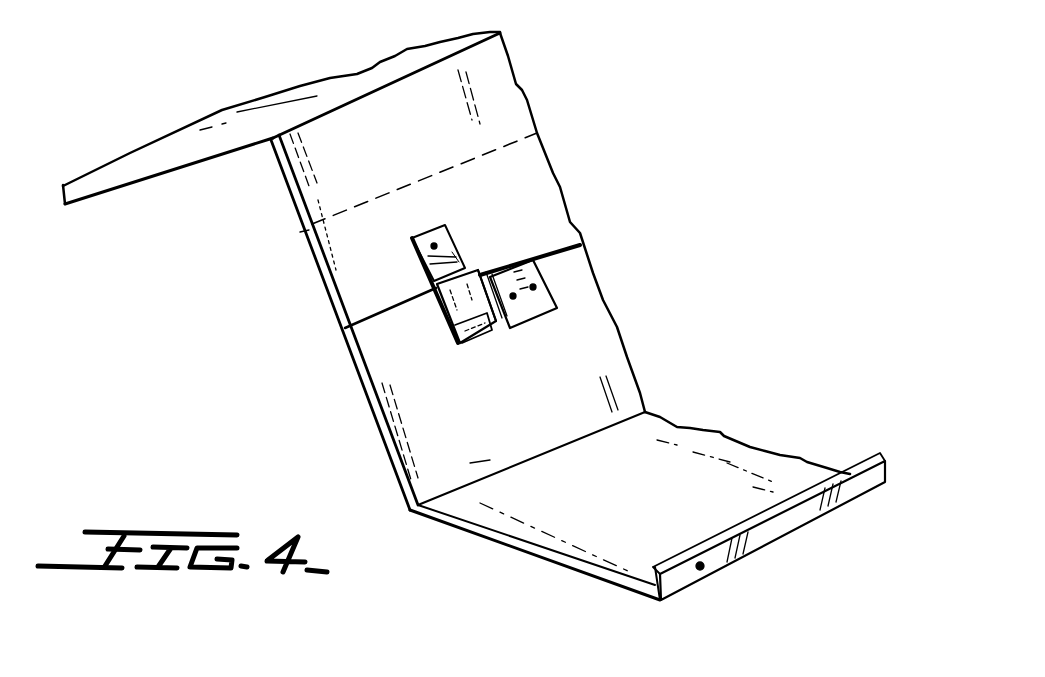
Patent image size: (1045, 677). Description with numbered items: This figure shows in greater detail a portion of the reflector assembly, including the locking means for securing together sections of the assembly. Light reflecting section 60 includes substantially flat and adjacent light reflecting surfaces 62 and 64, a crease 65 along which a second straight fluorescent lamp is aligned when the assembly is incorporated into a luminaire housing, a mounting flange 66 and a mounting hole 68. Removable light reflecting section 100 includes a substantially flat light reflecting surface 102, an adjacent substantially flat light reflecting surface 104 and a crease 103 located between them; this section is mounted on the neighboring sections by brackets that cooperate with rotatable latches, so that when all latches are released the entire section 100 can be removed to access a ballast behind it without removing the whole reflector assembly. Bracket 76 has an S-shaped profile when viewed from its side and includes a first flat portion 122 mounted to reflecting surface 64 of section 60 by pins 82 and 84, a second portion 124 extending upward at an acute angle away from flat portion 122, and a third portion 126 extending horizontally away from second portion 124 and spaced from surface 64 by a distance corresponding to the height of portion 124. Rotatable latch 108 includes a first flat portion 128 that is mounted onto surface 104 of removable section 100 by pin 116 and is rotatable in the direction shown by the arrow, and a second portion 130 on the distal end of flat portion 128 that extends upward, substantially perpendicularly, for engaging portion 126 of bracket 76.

The removable light reflecting section 100 is at (250, 185).
The light reflecting surface 102 is at (222, 112).
The crease 103 is at (373, 88).
The light reflecting surface 104 is at (429, 147).
The rotatable latch 108 is at (407, 211).
The pin 116 is at (437, 246).
The first flat portion 128 is at (456, 254).
The third portion 126 is at (443, 328).
The second portion 130 is at (472, 349).
The second portion 124 is at (506, 328).
The first flat portion 122 is at (541, 306).
The pin 82 is at (535, 287).
The pin 84 is at (515, 299).
The bracket 76 is at (550, 265).
The light reflecting surface 64 is at (500, 458).
The light reflecting surface 62 is at (654, 512).
The crease 65 is at (458, 492).
The light reflecting section 60 is at (590, 578).
The mounting flange 66 is at (790, 517).
The mounting hole 68 is at (700, 569).